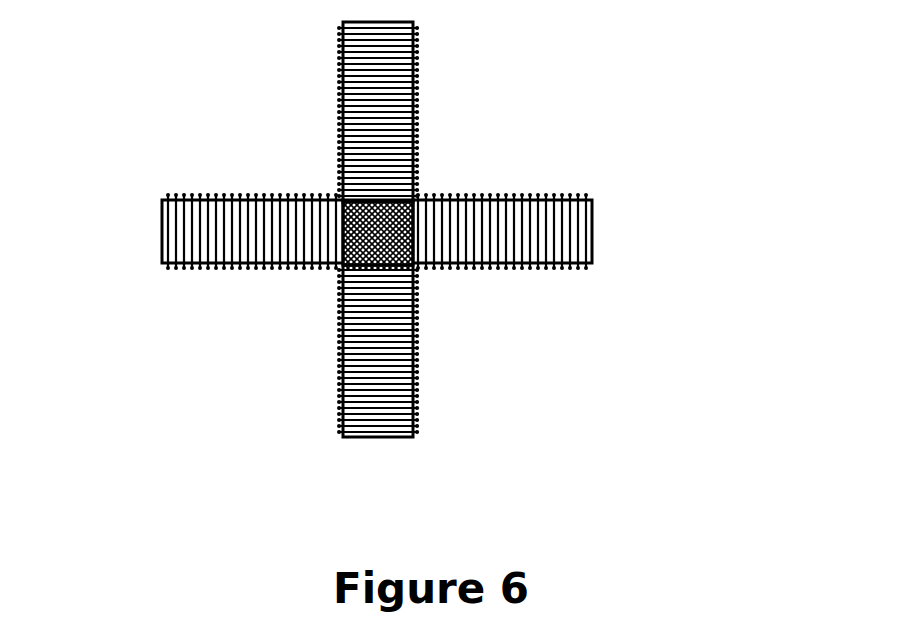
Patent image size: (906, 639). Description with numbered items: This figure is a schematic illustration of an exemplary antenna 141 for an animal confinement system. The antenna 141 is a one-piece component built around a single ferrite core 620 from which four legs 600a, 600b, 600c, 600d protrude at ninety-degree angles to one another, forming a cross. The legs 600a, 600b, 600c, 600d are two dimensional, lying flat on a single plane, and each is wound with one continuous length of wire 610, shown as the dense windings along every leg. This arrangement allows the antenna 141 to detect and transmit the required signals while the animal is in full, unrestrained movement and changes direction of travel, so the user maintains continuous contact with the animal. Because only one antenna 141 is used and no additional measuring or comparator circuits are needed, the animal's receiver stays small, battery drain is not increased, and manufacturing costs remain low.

The antenna 141 is at (693, 0).
The protruding leg 600a is at (592, 231).
The protruding leg 600b is at (426, 393).
The protruding leg 600c is at (162, 237).
The protruding leg 600d is at (334, 105).
The wire 610 is at (413, 349).
The ferrite core 620 is at (340, 147).